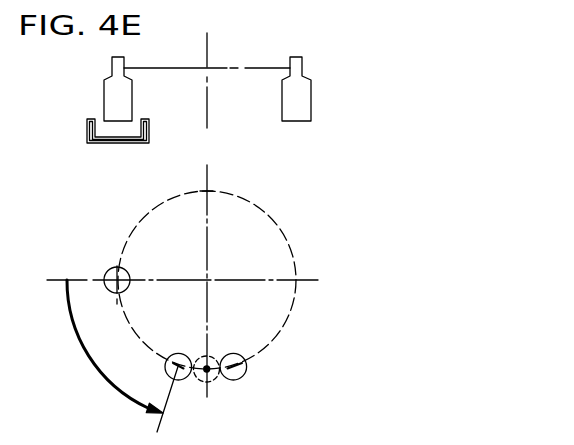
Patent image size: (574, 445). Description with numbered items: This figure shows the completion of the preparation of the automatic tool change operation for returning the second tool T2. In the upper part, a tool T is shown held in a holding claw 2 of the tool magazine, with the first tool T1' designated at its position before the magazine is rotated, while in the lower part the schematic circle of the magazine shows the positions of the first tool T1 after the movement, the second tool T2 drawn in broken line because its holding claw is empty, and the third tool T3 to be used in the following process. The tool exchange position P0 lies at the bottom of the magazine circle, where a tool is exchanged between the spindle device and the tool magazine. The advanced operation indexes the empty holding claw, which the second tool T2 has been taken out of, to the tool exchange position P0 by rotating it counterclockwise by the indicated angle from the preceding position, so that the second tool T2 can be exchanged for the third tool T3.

The first tool before movement T1' is at (87, 180).
The tool T is at (311, 93).
The holder 2 is at (111, 142).
The first tool T1 is at (177, 394).
The second tool T2 is at (218, 384).
The tool exchange position P0 is at (213, 354).
The third tool T3 is at (247, 368).